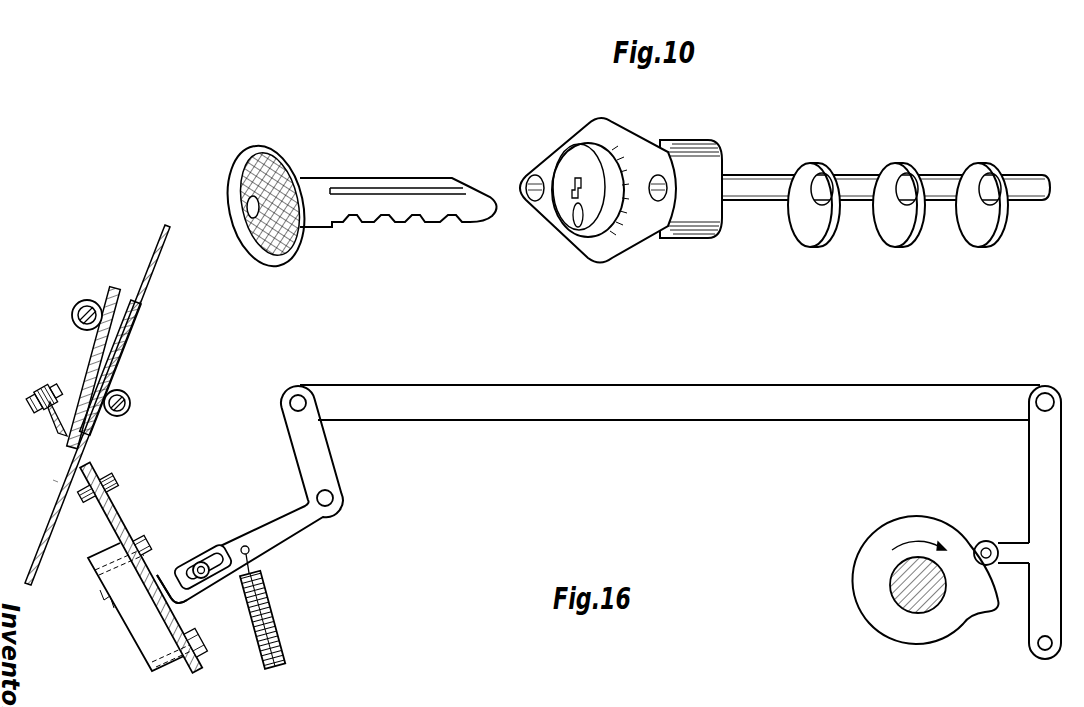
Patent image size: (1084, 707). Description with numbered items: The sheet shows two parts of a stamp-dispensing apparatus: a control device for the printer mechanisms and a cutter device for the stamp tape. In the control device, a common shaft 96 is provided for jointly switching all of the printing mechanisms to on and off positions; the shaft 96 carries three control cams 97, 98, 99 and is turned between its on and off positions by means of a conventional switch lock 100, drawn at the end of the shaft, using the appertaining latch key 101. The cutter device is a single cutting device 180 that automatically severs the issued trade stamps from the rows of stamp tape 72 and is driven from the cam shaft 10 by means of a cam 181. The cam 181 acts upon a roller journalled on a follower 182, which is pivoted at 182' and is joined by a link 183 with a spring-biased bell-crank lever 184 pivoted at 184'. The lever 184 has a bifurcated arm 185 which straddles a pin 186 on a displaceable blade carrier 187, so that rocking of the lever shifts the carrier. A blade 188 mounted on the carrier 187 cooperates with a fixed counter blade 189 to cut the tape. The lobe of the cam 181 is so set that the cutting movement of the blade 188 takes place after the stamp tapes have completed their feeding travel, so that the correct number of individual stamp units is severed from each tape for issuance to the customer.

In FIG. 10, the common shaft 96 is at (1028, 190).
In FIG. 10, the control cam 97 is at (808, 233).
In FIG. 10, the control cam 98 is at (890, 235).
In FIG. 10, the control cam 99 is at (977, 233).
In FIG. 10, the lock cylinder 100 is at (650, 224).
In FIG. 10, the latch key 101 is at (410, 210).
In FIG. 16, the cam shaft 10 is at (893, 582).
In FIG. 16, the stamp tape 72 is at (32, 582).
In FIG. 16, the cutting device 180 is at (107, 575).
In FIG. 16, the cam 181 is at (860, 597).
In FIG. 16, the follower 182 is at (1010, 522).
In FIG. 16, the pivot 182' is at (1001, 658).
In FIG. 16, the link 183 is at (640, 394).
In FIG. 16, the bell-crank lever 184 is at (250, 494).
In FIG. 16, the pivot 184' is at (353, 503).
In FIG. 16, the bifurcated arm 185 is at (208, 547).
In FIG. 16, the pin 186 is at (209, 580).
In FIG. 16, the blade carrier 187 is at (168, 572).
In FIG. 16, the blade 188 is at (70, 483).
In FIG. 16, the counter blade 189 is at (50, 417).